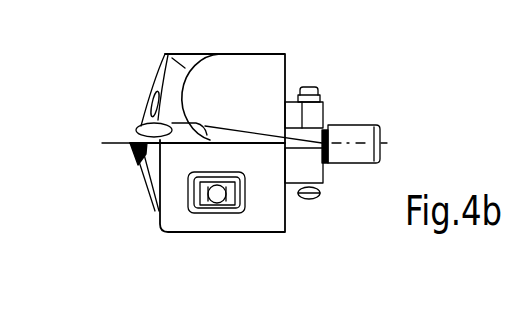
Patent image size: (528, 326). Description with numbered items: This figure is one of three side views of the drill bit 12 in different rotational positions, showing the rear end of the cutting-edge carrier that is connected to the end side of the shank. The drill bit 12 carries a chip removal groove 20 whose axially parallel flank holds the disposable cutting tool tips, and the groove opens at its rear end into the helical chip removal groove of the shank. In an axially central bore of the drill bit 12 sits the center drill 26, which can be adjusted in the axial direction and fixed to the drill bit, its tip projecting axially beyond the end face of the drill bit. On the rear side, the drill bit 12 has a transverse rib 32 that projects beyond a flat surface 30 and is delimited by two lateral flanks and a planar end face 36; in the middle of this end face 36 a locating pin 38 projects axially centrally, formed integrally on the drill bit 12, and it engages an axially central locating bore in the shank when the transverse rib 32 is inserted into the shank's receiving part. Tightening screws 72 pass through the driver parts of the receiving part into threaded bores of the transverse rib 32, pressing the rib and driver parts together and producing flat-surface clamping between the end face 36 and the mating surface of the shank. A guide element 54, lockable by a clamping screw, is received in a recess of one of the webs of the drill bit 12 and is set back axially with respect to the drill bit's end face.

The drill bit 12 is at (170, 55).
The chip removal groove 20 is at (230, 78).
The center drill 26 is at (130, 142).
The flat surface 30 is at (290, 183).
The transverse rib 32 is at (323, 138).
The end face 36 is at (328, 170).
The locating pin 38 is at (365, 145).
The guide element 54 is at (203, 212).
The tightening screw 72 is at (309, 87).